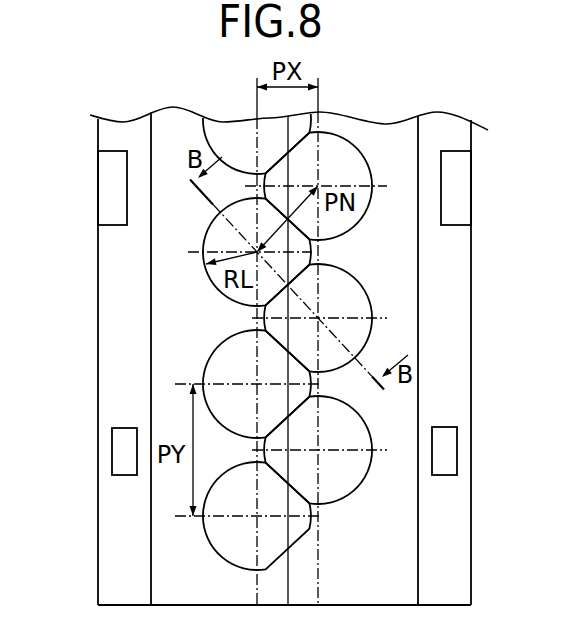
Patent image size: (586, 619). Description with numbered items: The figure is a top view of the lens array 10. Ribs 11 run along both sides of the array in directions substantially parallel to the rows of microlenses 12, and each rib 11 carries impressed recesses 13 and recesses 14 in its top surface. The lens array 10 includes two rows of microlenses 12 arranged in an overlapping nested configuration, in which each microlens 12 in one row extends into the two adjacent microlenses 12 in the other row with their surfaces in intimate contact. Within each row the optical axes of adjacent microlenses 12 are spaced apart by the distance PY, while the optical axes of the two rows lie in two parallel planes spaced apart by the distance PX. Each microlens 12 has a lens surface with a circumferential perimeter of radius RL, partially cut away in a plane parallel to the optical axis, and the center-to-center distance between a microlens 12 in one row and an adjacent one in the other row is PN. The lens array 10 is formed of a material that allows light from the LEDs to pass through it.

The lens array 10 is at (98, 283).
The rib 11 is at (110, 358).
The microlens 12 is at (372, 300).
The impressed recess 13 is at (127, 452).
The recess 14 is at (112, 190).